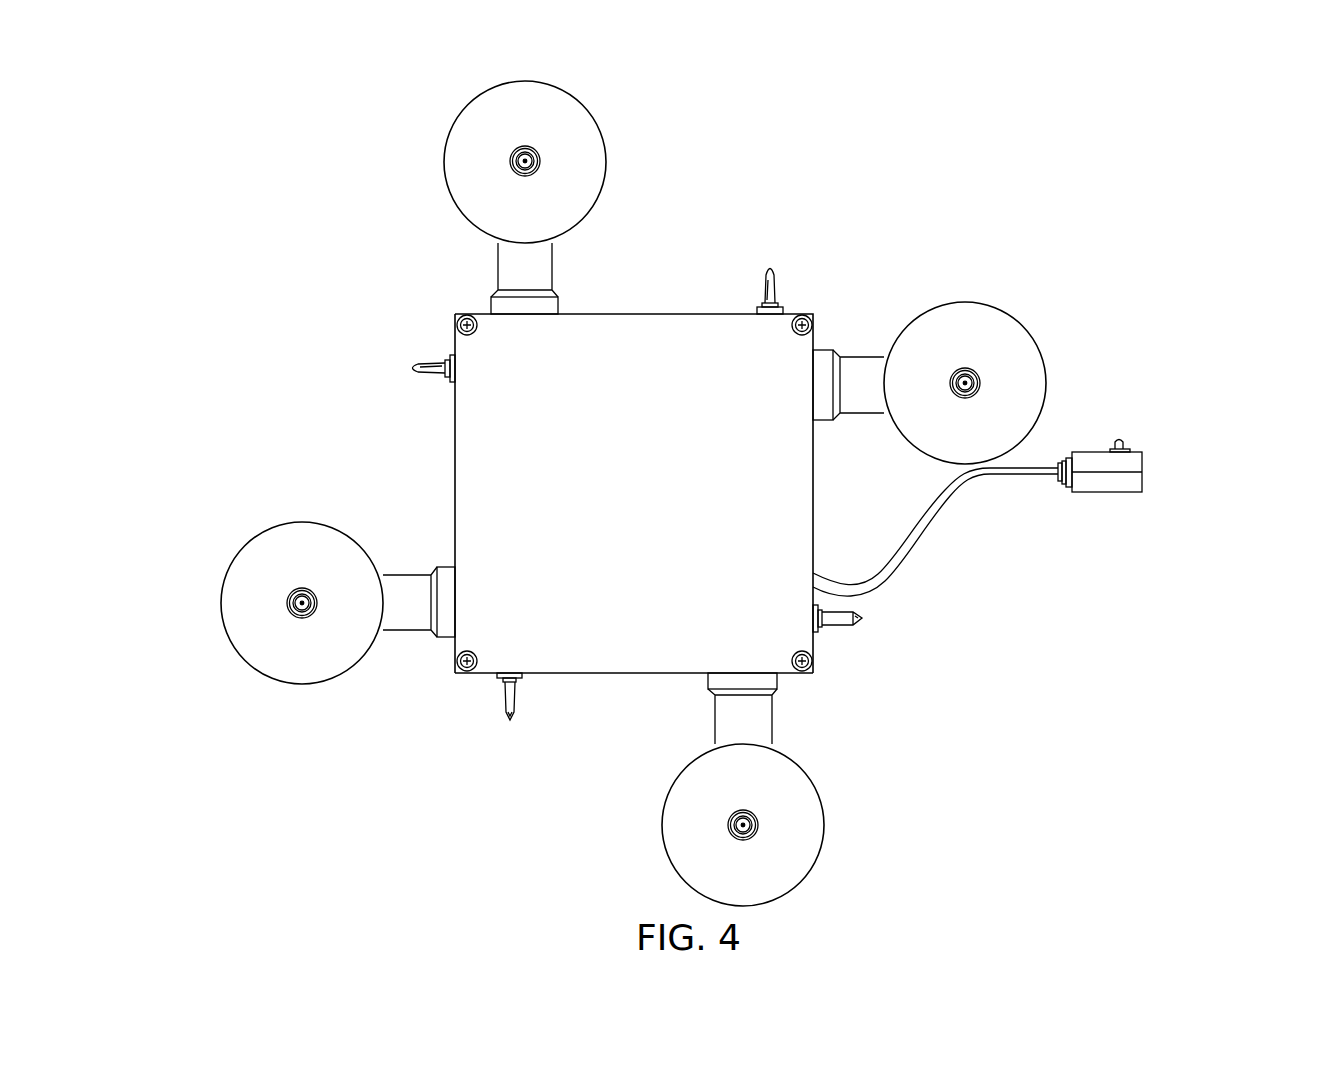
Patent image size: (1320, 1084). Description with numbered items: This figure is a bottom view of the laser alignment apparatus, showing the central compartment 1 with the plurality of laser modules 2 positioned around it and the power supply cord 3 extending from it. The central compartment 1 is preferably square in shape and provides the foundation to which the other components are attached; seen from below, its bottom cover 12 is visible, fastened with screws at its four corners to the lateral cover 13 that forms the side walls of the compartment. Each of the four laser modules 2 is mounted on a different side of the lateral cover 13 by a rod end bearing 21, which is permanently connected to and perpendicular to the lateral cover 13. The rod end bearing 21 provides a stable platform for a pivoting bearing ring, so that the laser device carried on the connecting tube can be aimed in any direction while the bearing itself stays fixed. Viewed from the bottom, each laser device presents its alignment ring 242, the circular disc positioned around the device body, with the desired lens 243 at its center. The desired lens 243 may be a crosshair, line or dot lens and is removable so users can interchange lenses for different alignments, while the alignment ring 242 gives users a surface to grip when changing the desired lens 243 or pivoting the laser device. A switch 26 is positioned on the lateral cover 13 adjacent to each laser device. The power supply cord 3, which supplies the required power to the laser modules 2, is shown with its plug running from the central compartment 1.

The central compartment 1 is at (742, 294).
The laser module 2 is at (637, 152).
The power supply cord 3 is at (1135, 483).
The bottom cover 12 is at (672, 655).
The lateral cover 13 is at (455, 487).
The rod end bearing 21 is at (535, 262).
The switch 26 is at (771, 272).
The alignment ring 242 is at (455, 177).
The desired lens 243 is at (510, 158).